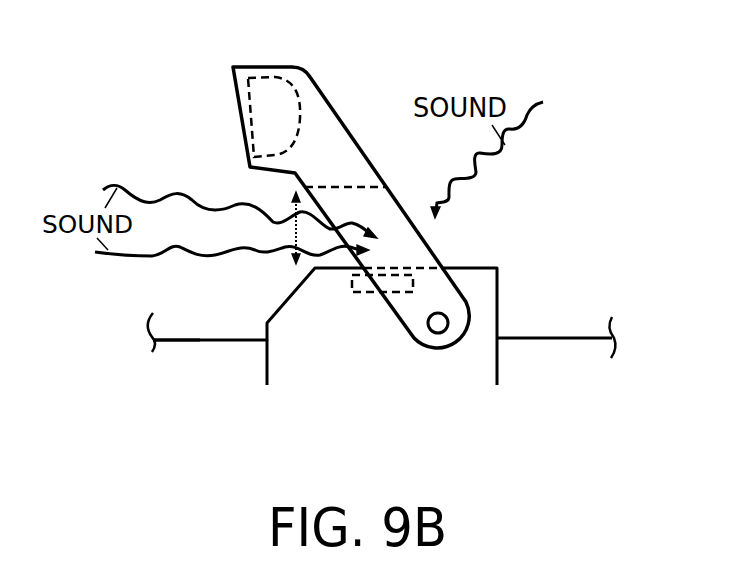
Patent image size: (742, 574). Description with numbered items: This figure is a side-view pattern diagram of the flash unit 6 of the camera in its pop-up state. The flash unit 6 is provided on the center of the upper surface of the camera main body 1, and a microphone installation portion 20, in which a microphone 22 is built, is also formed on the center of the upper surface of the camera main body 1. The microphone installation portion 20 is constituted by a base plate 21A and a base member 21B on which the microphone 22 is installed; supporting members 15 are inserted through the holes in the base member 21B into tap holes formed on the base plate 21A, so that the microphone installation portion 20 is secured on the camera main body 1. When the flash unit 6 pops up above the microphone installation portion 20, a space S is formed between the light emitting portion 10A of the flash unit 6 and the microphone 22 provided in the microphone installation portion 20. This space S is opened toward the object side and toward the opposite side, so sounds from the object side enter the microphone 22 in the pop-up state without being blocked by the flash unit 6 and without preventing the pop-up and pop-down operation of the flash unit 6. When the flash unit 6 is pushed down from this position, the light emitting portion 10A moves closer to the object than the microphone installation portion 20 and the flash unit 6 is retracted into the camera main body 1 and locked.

The camera main body 1 is at (207, 340).
The flash unit 6 is at (402, 85).
The light emitting portion 10A is at (253, 108).
The space S is at (297, 198).
The supporting member 15 is at (442, 322).
The microphone installation portion 20 is at (430, 305).
The base plate 21A is at (297, 326).
The base member 21B is at (497, 276).
The microphone 22 is at (402, 276).